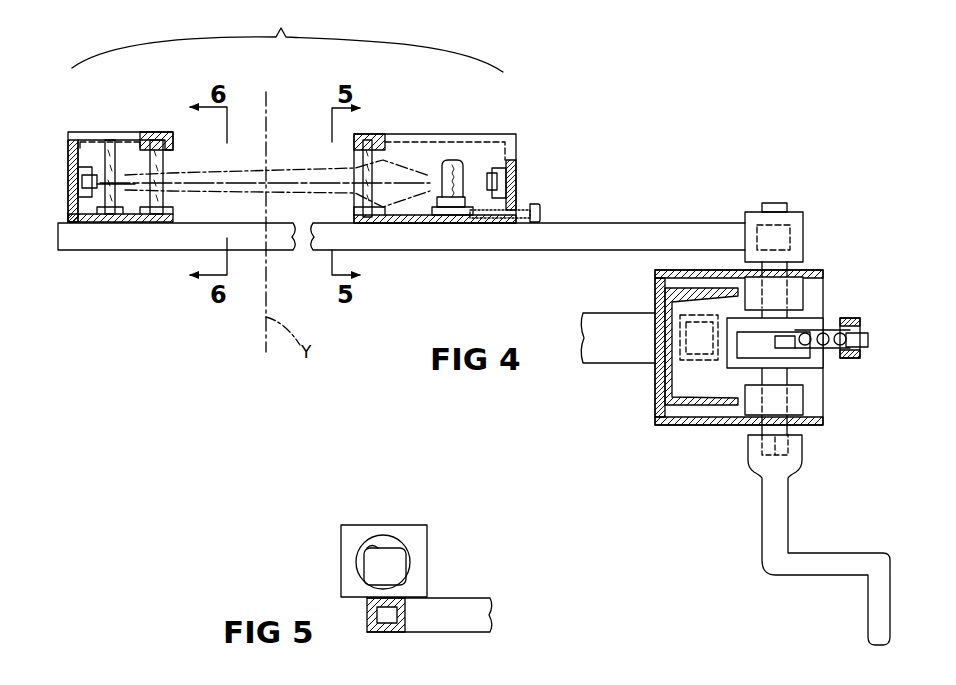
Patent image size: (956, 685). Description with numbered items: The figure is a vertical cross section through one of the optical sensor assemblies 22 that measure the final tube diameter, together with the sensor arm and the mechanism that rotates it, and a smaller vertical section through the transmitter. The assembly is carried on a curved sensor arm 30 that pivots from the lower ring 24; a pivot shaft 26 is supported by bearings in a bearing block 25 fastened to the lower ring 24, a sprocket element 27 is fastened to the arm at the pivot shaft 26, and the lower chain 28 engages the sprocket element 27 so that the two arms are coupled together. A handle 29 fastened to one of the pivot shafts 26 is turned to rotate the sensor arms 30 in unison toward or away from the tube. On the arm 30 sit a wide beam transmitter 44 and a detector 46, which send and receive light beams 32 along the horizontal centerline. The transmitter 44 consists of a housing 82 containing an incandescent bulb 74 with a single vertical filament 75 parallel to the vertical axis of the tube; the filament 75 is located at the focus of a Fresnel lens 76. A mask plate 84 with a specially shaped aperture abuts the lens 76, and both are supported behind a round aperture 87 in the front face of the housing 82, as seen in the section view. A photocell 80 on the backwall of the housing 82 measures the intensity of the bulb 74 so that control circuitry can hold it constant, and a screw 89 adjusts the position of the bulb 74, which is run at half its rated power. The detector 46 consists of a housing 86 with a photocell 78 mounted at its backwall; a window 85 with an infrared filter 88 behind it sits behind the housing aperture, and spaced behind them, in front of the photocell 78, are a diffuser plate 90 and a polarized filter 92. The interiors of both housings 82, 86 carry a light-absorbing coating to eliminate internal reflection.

In FIG. 4, the optical sensor assembly 22 is at (309, 117).
In FIG. 4, the lower ring 24 is at (617, 355).
In FIG. 4, the housing 25 is at (825, 273).
In FIG. 4, the pivot shaft 26 is at (775, 205).
In FIG. 4, the sprocket element 27 is at (815, 340).
In FIG. 4, the lower chain 28 is at (862, 353).
In FIG. 4, the handle 29 is at (853, 561).
In FIG. 4, the sensor arm 30 is at (480, 255).
In FIG. 5, the sensor arm 30 is at (455, 625).
In FIG. 4, the light beam 32 is at (300, 168).
In FIG. 4, the wide beam transmitter 44 is at (431, 97).
In FIG. 5, the wide beam transmitter 44 is at (399, 548).
In FIG. 4, the detector 46 is at (131, 102).
In FIG. 4, the incandescent bulb 74 is at (462, 160).
In FIG. 4, the vertical filament 75 is at (440, 160).
In FIG. 4, the Fresnel lens 76 is at (378, 165).
In FIG. 5, the Fresnel lens 76 is at (372, 564).
In FIG. 4, the photocell 78 is at (76, 177).
In FIG. 4, the photocell 80 is at (506, 178).
In FIG. 4, the housing 82 is at (462, 133).
In FIG. 5, the housing 82 is at (340, 545).
In FIG. 4, the mask plate 84 is at (360, 200).
In FIG. 5, the mask plate 84 is at (390, 540).
In FIG. 4, the window 85 is at (165, 162).
In FIG. 5, the window 85 is at (370, 546).
In FIG. 4, the housing 86 is at (110, 131).
In FIG. 5, the round aperture 87 is at (367, 592).
In FIG. 4, the infrared filter 88 is at (160, 200).
In FIG. 4, the screw 89 is at (538, 215).
In FIG. 4, the diffuser plate 90 is at (130, 140).
In FIG. 4, the polarized filter 92 is at (105, 200).